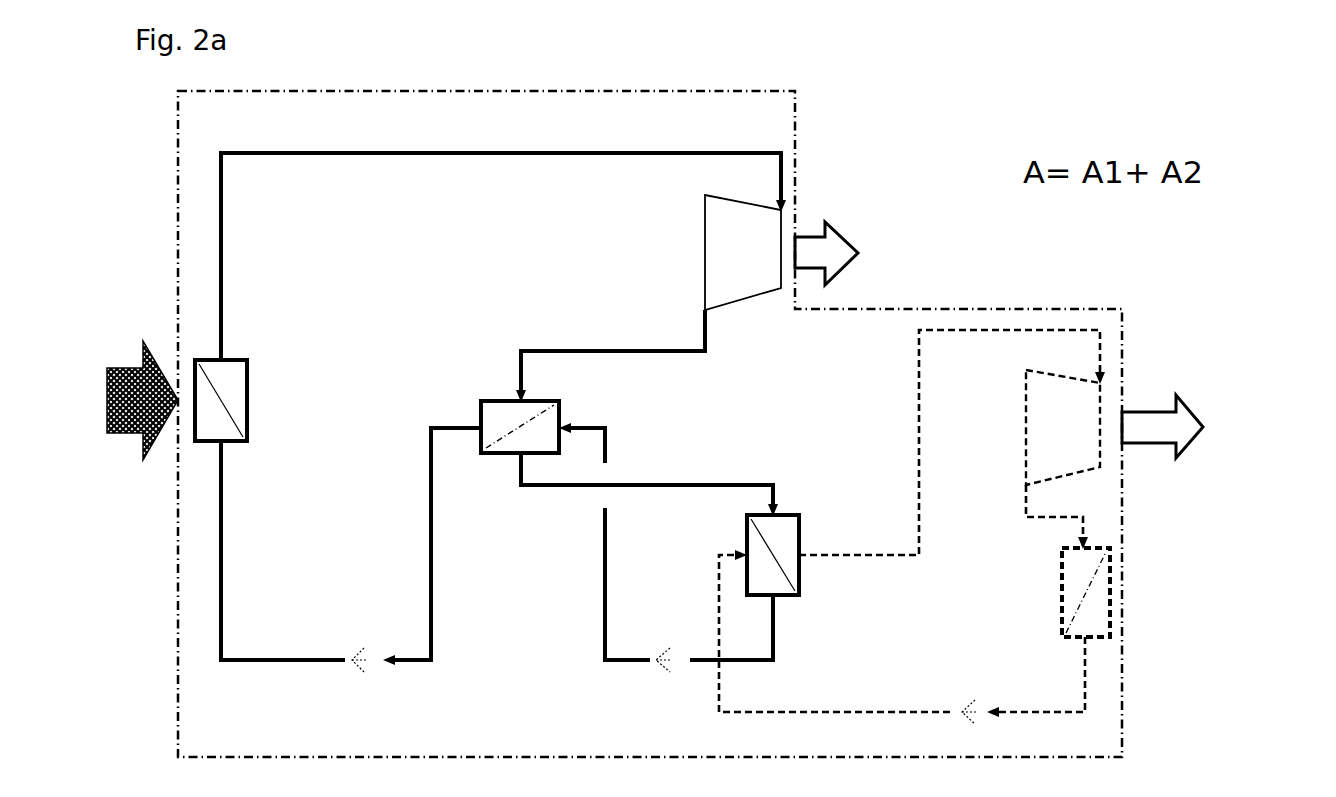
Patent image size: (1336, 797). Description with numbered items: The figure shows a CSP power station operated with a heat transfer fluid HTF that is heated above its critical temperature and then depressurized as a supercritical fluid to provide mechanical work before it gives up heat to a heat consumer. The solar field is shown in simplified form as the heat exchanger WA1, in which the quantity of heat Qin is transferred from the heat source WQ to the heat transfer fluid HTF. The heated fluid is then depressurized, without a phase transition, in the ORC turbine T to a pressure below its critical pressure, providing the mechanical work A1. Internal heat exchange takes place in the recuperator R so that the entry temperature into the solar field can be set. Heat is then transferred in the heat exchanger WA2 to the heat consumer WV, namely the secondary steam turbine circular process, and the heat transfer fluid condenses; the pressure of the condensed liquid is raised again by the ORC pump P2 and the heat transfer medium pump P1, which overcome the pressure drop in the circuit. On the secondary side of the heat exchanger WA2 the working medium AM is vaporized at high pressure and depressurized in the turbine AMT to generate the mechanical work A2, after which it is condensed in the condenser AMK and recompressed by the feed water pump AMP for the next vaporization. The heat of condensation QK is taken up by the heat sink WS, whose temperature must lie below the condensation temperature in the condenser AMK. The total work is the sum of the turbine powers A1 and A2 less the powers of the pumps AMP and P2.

The ORC turbine T is at (729, 250).
The heat exchanger WA1 is at (257, 400).
The recuperator R is at (518, 408).
The heat exchanger WA2 is at (737, 549).
The heat consumer WV is at (840, 585).
The heat transfer medium pump P1 is at (356, 641).
The ORC pump P2 is at (668, 642).
The heat transfer fluid HTF is at (235, 683).
The working medium AM is at (909, 521).
The turbine AMT is at (1033, 427).
The condenser AMK is at (1059, 592).
The feed water pump AMP is at (966, 692).
The heat source WQ is at (101, 400).
The quantity of heat Qin is at (134, 307).
The mechanical work A1 is at (853, 253).
The mechanical work A2 is at (1187, 426).
The heat of condensation QK is at (1229, 596).
The heat sink WS is at (1284, 593).